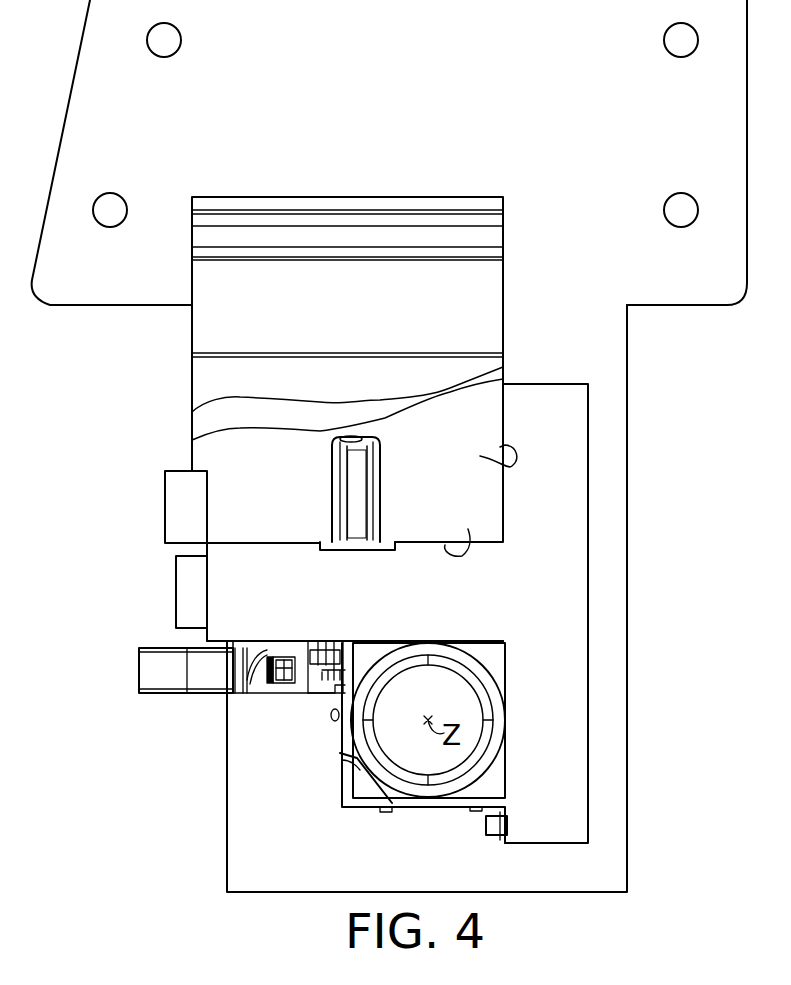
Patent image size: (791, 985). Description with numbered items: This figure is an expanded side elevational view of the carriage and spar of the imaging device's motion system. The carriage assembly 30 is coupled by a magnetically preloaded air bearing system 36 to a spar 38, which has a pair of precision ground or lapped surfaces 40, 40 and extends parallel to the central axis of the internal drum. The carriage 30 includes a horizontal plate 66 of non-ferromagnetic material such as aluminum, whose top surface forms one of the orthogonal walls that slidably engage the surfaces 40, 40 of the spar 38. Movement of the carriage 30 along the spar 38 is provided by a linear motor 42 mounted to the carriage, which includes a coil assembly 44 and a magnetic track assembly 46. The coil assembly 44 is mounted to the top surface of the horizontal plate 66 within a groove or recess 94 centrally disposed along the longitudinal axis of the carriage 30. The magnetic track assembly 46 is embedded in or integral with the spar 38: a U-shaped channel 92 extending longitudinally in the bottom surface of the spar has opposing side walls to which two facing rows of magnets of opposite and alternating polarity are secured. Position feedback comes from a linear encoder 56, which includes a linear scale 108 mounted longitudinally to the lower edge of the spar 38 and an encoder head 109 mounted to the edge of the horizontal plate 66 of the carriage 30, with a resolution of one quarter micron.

The carriage assembly 30 is at (597, 413).
The magnetically preloaded air bearing system 36 is at (290, 473).
The spar 38 is at (475, 400).
The precision ground or lapped surfaces 40 is at (481, 495).
The linear motor 42 is at (350, 432).
The coil assembly 44 is at (365, 484).
The magnetic track assembly 46 is at (388, 487).
The linear scale or encoder 56 is at (157, 538).
The horizontal plate 66 is at (275, 575).
The U-shaped channel 92 is at (337, 437).
The groove or recess 94 is at (398, 542).
The linear scale 108 is at (178, 503).
The encoder head 109 is at (190, 592).